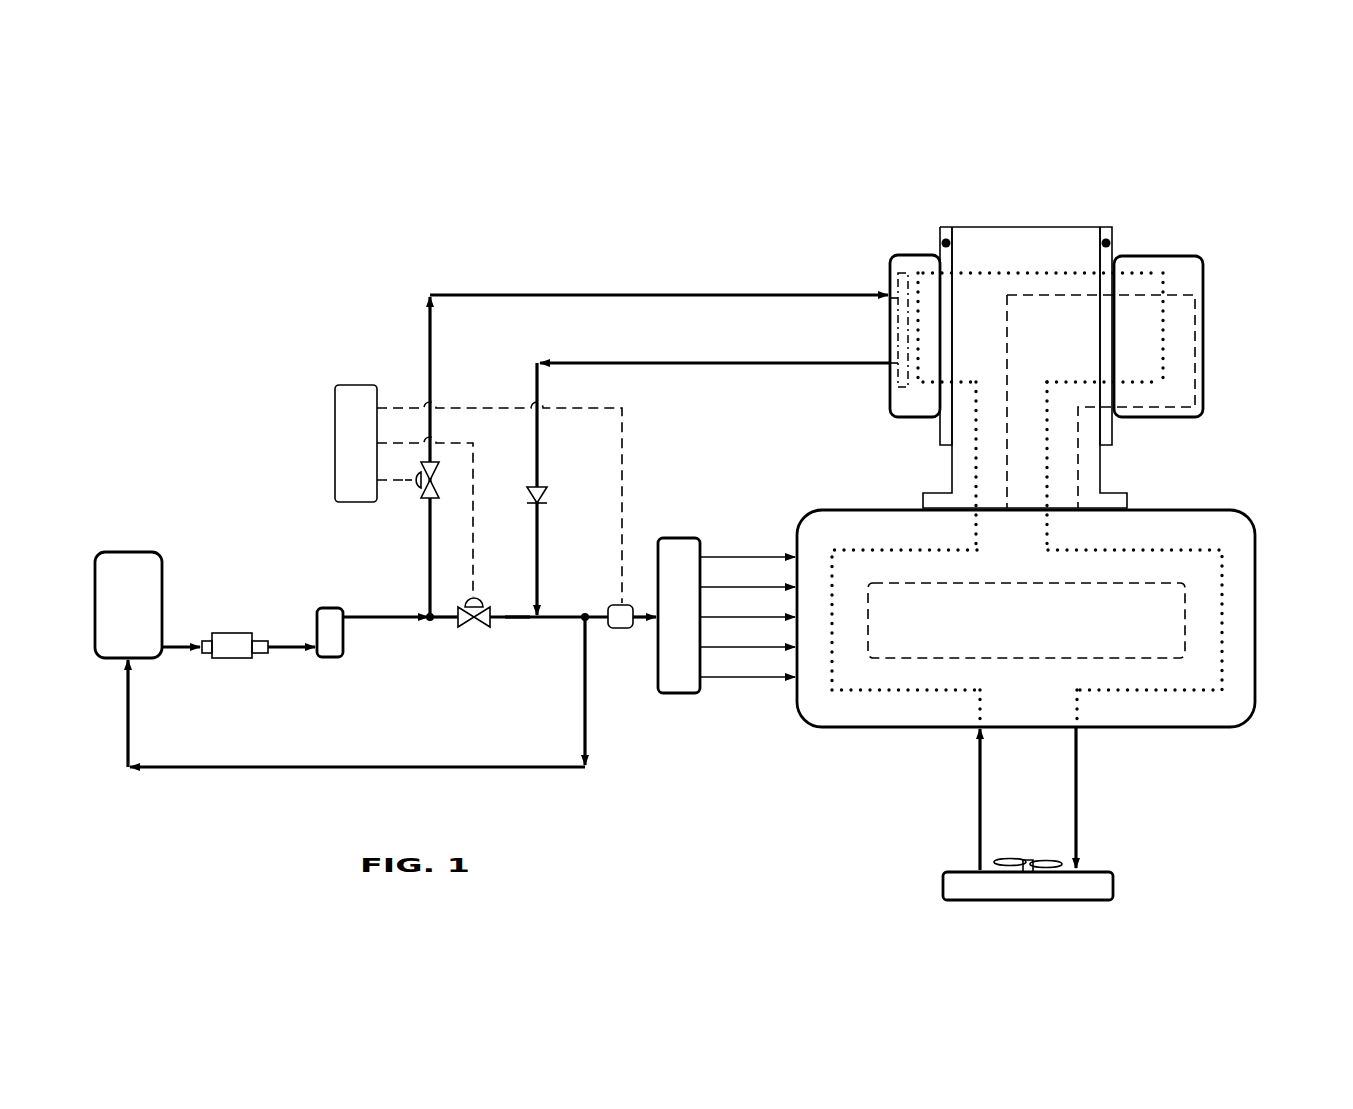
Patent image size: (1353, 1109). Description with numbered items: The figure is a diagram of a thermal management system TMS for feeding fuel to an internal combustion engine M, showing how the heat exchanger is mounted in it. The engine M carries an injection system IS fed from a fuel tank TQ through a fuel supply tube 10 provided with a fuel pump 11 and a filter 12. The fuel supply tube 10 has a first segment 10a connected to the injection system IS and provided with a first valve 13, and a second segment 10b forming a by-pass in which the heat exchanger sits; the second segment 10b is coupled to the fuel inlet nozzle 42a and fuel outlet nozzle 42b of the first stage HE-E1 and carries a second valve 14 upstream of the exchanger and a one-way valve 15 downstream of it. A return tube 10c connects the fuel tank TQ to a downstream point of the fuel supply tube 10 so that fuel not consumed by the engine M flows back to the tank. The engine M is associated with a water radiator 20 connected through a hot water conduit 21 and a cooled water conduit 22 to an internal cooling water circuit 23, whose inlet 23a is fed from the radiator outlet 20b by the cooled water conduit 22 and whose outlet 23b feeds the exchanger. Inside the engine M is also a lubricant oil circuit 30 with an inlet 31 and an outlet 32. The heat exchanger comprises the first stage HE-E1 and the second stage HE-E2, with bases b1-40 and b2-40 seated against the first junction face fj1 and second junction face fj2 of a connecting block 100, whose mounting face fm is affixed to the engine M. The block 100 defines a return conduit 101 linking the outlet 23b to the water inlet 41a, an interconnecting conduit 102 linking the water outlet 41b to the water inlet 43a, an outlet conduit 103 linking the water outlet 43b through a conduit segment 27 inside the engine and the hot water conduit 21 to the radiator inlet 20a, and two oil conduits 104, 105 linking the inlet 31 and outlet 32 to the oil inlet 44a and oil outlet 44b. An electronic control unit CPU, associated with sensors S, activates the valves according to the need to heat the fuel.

The fuel supply tube 10 is at (382, 625).
The first segment 10a is at (513, 623).
The second segment 10b is at (532, 293).
The return tube 10c is at (288, 763).
The fuel pump 11 is at (237, 628).
The filter 12 is at (315, 622).
The first valve 13 is at (470, 625).
The second valve 14 is at (415, 495).
The one-way valve 15 is at (548, 495).
The sensors S is at (622, 630).
The injection system IS is at (678, 695).
The fuel tank TQ is at (130, 550).
The thermal management system TMS is at (380, 348).
The electronic control unit CPU is at (335, 405).
The internal combustion engine M is at (835, 728).
The water radiator 20 is at (940, 885).
The inlet of the water radiator 20a is at (1080, 858).
The outlet of the water radiator 20b is at (972, 867).
The hot water conduit 21 is at (1078, 800).
The cooled water conduit 22 is at (985, 805).
The cooling water circuit 23 is at (847, 545).
The inlet of the cooling water circuit 23a is at (975, 730).
The outlet of the cooling water circuit 23b is at (968, 515).
The conduit segment 27 is at (1223, 625).
The lubricant oil circuit 30 is at (1083, 657).
The inlet of the lubricant oil circuit 31 is at (1010, 515).
The outlet of the lubricant oil circuit 32 is at (1080, 517).
The mounting face fm is at (993, 515).
The connecting block 100 is at (1020, 225).
The return conduit 101 is at (975, 412).
The interconnecting conduit 102 is at (1028, 268).
The outlet conduit 103 is at (1047, 432).
The oil conduit 104 is at (1005, 465).
The oil conduit 105 is at (1080, 459).
The water inlet 41a is at (932, 360).
The water outlet 41b is at (930, 267).
The fuel inlet nozzle 42a is at (890, 297).
The fuel outlet nozzle 42b is at (890, 363).
The water inlet 43a is at (1120, 282).
The water outlet 43b is at (1117, 378).
The oil inlet 44a is at (1116, 300).
The oil outlet 44b is at (1115, 404).
The base of the first stage b1-40 is at (950, 243).
The base of the second stage b2-40 is at (1108, 242).
The first stage of the heat exchanger HE-E1 is at (900, 247).
The second stage of the heat exchanger HE-E2 is at (1210, 342).
The first junction face fj1 is at (950, 424).
The second junction face fj2 is at (1108, 425).